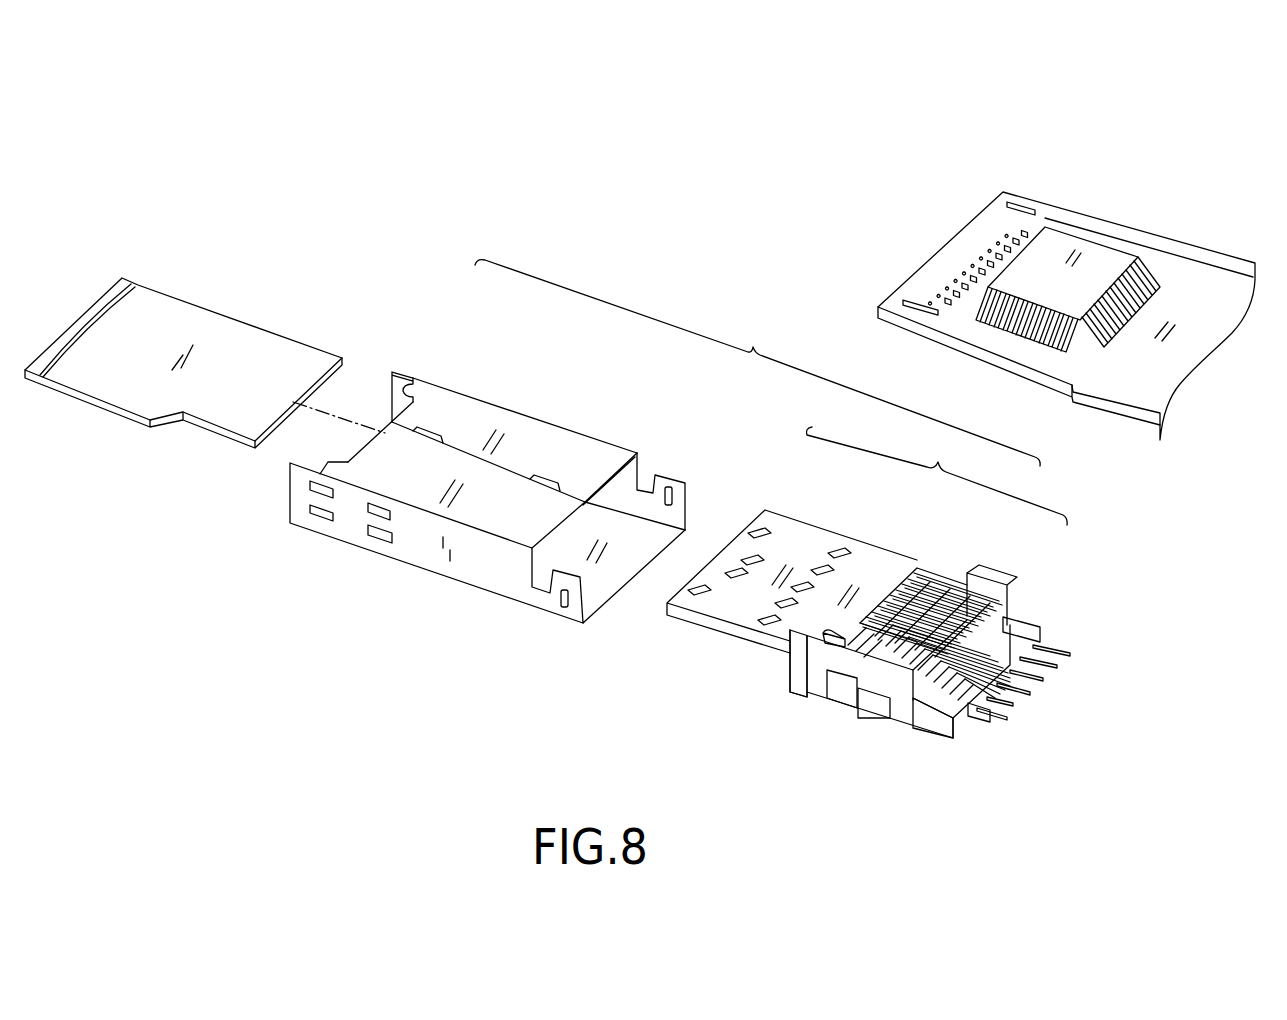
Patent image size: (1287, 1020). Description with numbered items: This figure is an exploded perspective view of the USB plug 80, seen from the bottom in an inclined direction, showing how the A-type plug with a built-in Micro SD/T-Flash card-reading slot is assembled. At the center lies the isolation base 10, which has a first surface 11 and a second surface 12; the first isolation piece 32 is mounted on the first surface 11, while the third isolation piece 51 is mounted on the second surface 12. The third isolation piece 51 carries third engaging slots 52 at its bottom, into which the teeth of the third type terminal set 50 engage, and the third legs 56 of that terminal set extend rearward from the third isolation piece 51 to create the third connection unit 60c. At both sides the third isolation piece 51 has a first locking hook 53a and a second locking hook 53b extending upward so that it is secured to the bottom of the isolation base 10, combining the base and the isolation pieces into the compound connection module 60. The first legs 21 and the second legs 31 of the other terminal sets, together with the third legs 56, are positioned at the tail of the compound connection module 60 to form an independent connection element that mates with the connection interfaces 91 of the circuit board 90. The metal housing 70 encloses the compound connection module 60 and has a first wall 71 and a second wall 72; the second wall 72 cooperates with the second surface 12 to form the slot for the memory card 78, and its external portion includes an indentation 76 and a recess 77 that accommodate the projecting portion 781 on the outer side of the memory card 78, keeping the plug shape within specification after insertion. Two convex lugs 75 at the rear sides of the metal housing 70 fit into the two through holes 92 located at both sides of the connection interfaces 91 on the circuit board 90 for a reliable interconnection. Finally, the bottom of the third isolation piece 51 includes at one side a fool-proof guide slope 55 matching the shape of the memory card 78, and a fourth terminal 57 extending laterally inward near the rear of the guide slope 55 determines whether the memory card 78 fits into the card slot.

The isolation base 10 is at (849, 610).
The first surface 11 is at (678, 622).
The second surface 12 is at (742, 550).
The first legs 21 is at (1007, 707).
The second legs 31 is at (990, 714).
The first isolation piece 32 is at (942, 736).
The third type terminal set 50 is at (935, 580).
The third isolation piece 51 is at (858, 676).
The third engaging slots 52 is at (990, 588).
The first locking hook 53a is at (887, 735).
The second locking hook 53b is at (792, 690).
The fool-proof guide slope 55 is at (816, 632).
The third legs 56 is at (1013, 615).
The fourth terminal 57 is at (868, 600).
The compound connection module 60 is at (919, 627).
The third connection unit 60c is at (950, 566).
The metal housing 70 is at (495, 493).
The first wall 71 is at (598, 590).
The second wall 72 is at (470, 407).
The convex lugs 75 is at (673, 470).
The indentation 76 is at (390, 418).
The recess 77 is at (408, 376).
The memory card 78 is at (183, 336).
The projecting portion 781 is at (111, 303).
The USB plug 80 is at (757, 363).
The circuit board 90 is at (1066, 302).
The connection interfaces 91 is at (993, 240).
The through holes 92 is at (1040, 210).